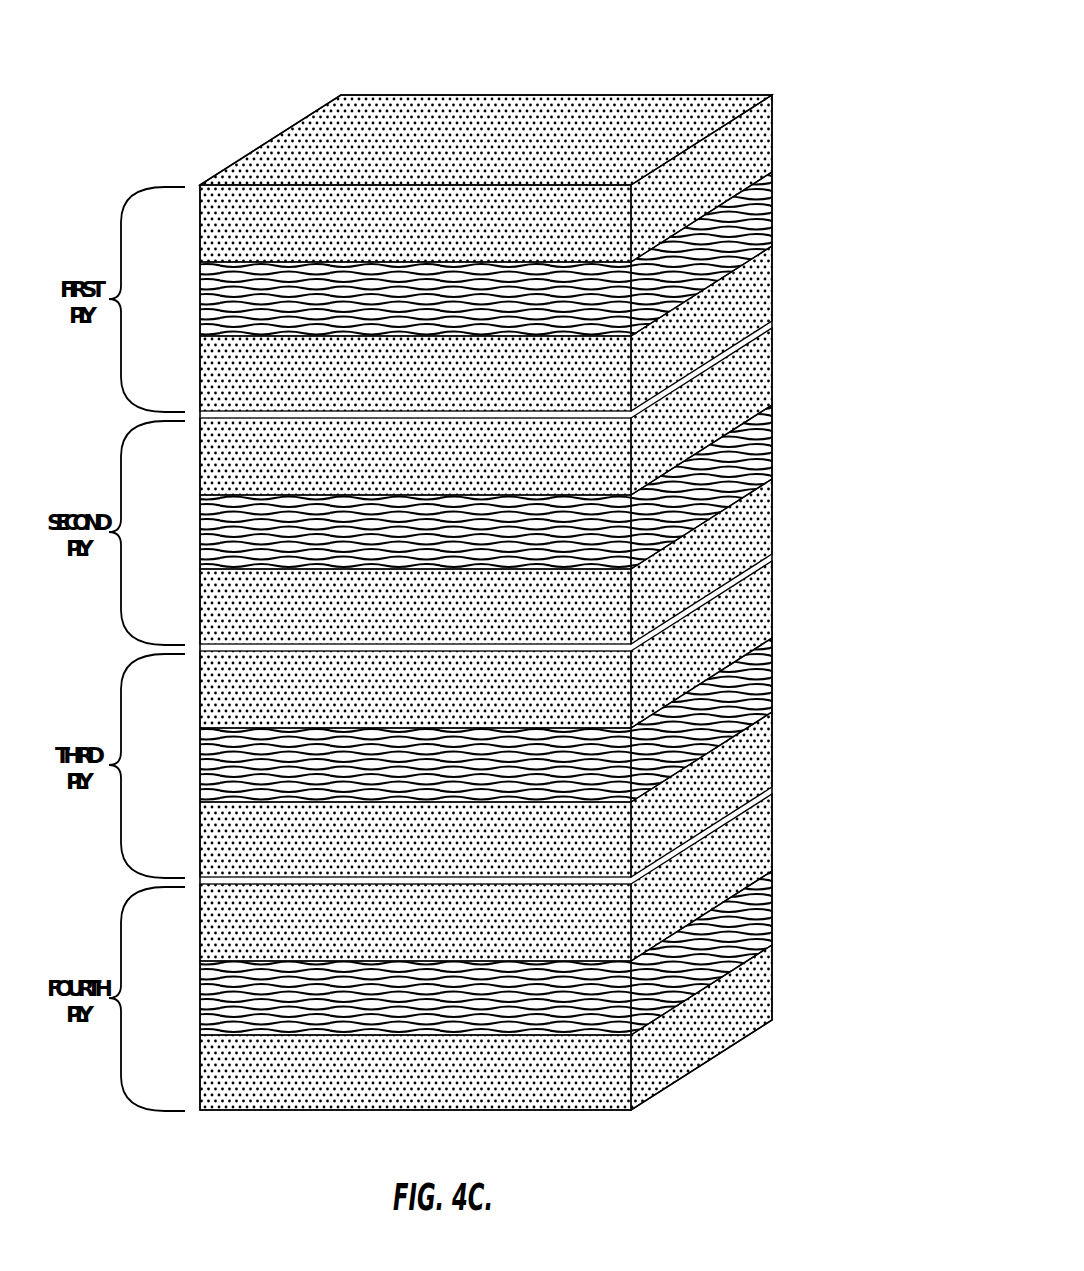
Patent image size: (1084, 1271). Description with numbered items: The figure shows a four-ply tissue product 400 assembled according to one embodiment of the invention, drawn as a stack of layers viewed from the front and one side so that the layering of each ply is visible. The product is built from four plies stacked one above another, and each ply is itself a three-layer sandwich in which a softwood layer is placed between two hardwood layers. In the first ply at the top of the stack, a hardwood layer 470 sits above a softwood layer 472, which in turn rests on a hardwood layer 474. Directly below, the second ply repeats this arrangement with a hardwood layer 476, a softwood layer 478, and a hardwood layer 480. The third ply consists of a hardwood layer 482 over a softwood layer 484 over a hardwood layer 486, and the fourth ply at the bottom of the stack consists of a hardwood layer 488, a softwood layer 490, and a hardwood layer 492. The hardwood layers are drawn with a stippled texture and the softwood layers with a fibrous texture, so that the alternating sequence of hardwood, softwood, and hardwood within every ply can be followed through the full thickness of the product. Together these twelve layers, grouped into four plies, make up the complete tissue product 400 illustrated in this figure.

The four-ply tissue product 400 is at (678, 55).
The hardwood layer 470 is at (753, 142).
The softwood layer 472 is at (772, 212).
The hardwood layer 474 is at (758, 292).
The hardwood layer 476 is at (773, 374).
The softwood layer 478 is at (773, 440).
The hardwood layer 480 is at (763, 523).
The hardwood layer 482 is at (773, 600).
The softwood layer 484 is at (775, 670).
The hardwood layer 486 is at (748, 762).
The hardwood layer 488 is at (773, 835).
The softwood layer 490 is at (772, 900).
The hardwood layer 492 is at (752, 995).